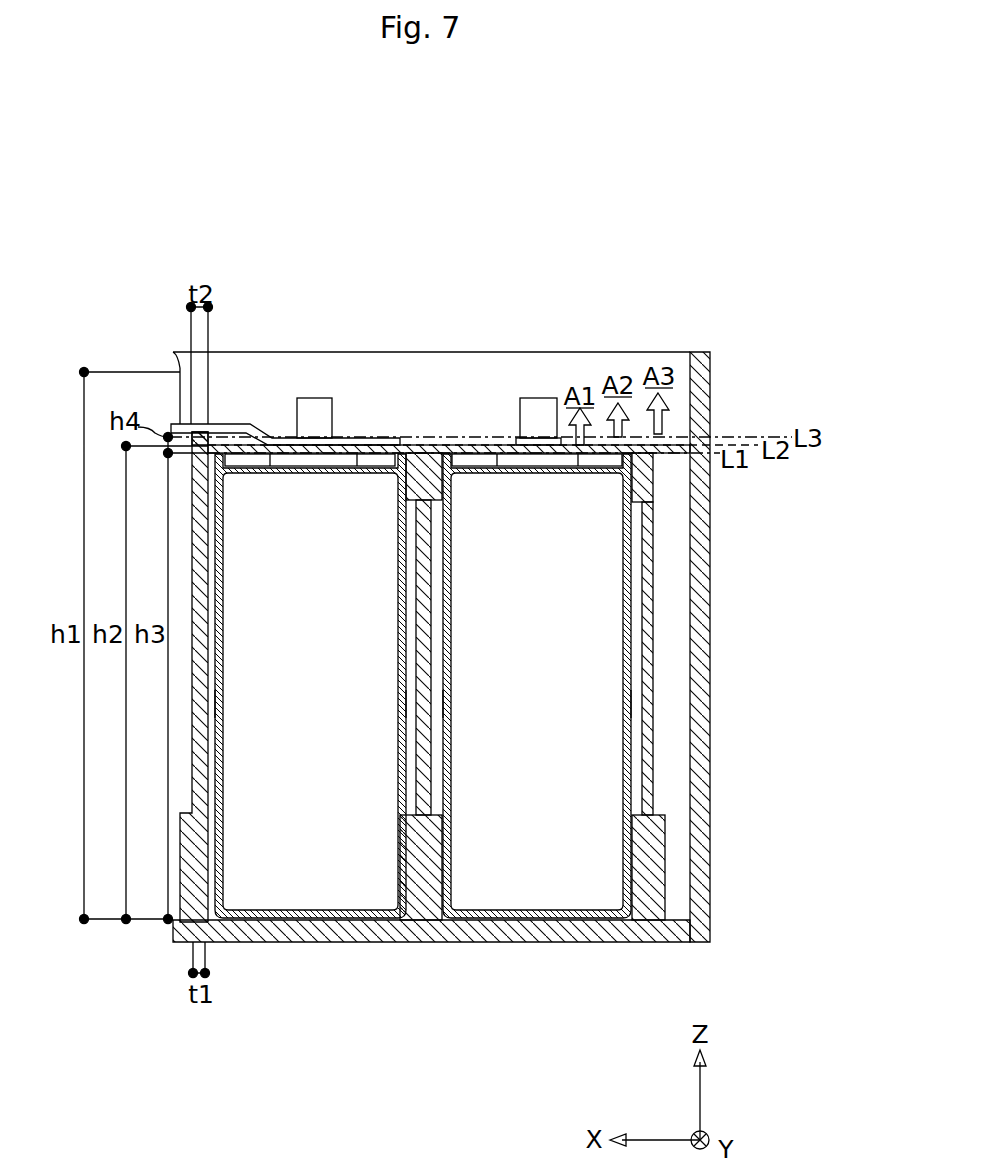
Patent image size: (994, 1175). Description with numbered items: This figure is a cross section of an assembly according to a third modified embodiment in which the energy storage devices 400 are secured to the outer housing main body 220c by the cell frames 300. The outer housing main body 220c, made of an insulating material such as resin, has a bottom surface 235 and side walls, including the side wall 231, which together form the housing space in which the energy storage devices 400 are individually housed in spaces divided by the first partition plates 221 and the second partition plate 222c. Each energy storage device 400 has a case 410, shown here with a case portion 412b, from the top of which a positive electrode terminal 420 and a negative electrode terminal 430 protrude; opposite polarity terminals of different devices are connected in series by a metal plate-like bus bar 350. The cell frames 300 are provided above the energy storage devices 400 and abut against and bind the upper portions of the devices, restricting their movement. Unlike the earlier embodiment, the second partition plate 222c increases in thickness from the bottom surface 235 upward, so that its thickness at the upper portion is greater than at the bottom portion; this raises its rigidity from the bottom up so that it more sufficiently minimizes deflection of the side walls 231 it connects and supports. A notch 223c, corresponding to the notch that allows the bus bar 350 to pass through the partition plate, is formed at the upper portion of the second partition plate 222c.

The outer housing main body 220c is at (706, 527).
The first partition plate 221 is at (417, 660).
The second partition plate 222c is at (200, 663).
The side wall upper end portion 223c is at (201, 428).
The side wall 231 is at (410, 360).
The bottom surface 235 is at (362, 930).
The cell frame 300 is at (420, 455).
The bus bar 350 is at (253, 424).
The energy storage device 400 is at (376, 430).
The case 410 is at (223, 578).
The cell case side wall 412b is at (223, 703).
The positive electrode terminal 420 is at (535, 403).
The negative electrode terminal 430 is at (313, 403).